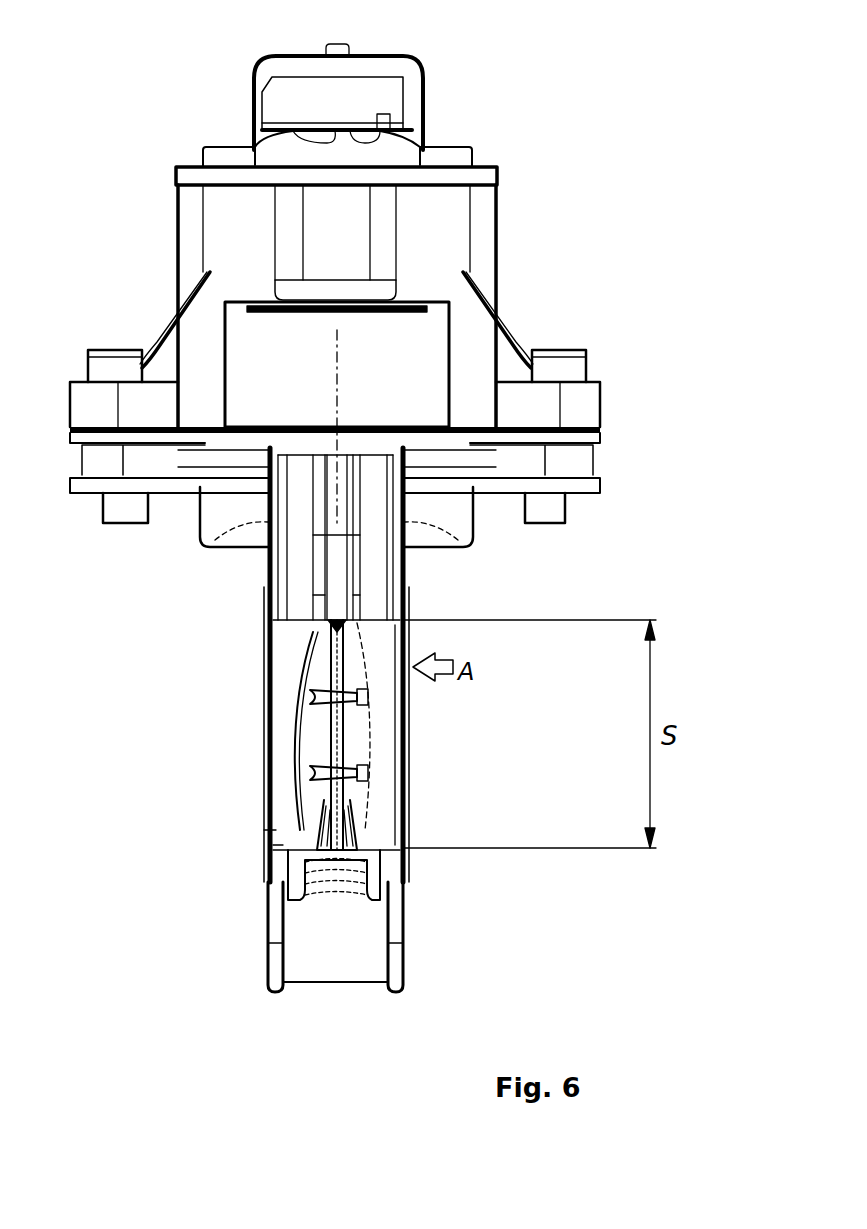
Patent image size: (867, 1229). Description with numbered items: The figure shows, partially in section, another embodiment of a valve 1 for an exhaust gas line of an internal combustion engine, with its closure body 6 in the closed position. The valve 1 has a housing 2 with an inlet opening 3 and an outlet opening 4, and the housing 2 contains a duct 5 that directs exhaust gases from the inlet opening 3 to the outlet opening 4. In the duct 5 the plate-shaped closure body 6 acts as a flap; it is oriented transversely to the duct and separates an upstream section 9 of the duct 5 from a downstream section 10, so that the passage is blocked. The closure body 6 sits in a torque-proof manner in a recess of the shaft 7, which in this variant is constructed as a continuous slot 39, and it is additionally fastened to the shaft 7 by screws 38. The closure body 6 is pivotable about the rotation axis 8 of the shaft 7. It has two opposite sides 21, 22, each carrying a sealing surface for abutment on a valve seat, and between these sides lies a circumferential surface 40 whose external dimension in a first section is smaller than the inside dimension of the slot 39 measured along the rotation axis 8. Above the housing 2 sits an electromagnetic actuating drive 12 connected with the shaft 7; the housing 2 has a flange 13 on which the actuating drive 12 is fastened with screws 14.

The valve 1 is at (513, 73).
The housing 2 is at (305, 943).
The inlet opening 3 is at (413, 770).
The outlet opening 4 is at (263, 835).
The duct 5 is at (388, 828).
The closure body 6 is at (337, 733).
The shaft 7 is at (320, 665).
The rotation axis 8 is at (342, 360).
The upstream section 9 is at (390, 730).
The downstream section 10 is at (278, 842).
The electromagnetic actuating drive 12 is at (483, 210).
The flange 13 is at (575, 460).
The screws 14 is at (105, 365).
The side 21 is at (380, 800).
The side 22 is at (347, 798).
The screws 38 is at (310, 697).
The continuous slot 39 is at (313, 632).
The circumferential surface 40 is at (340, 610).